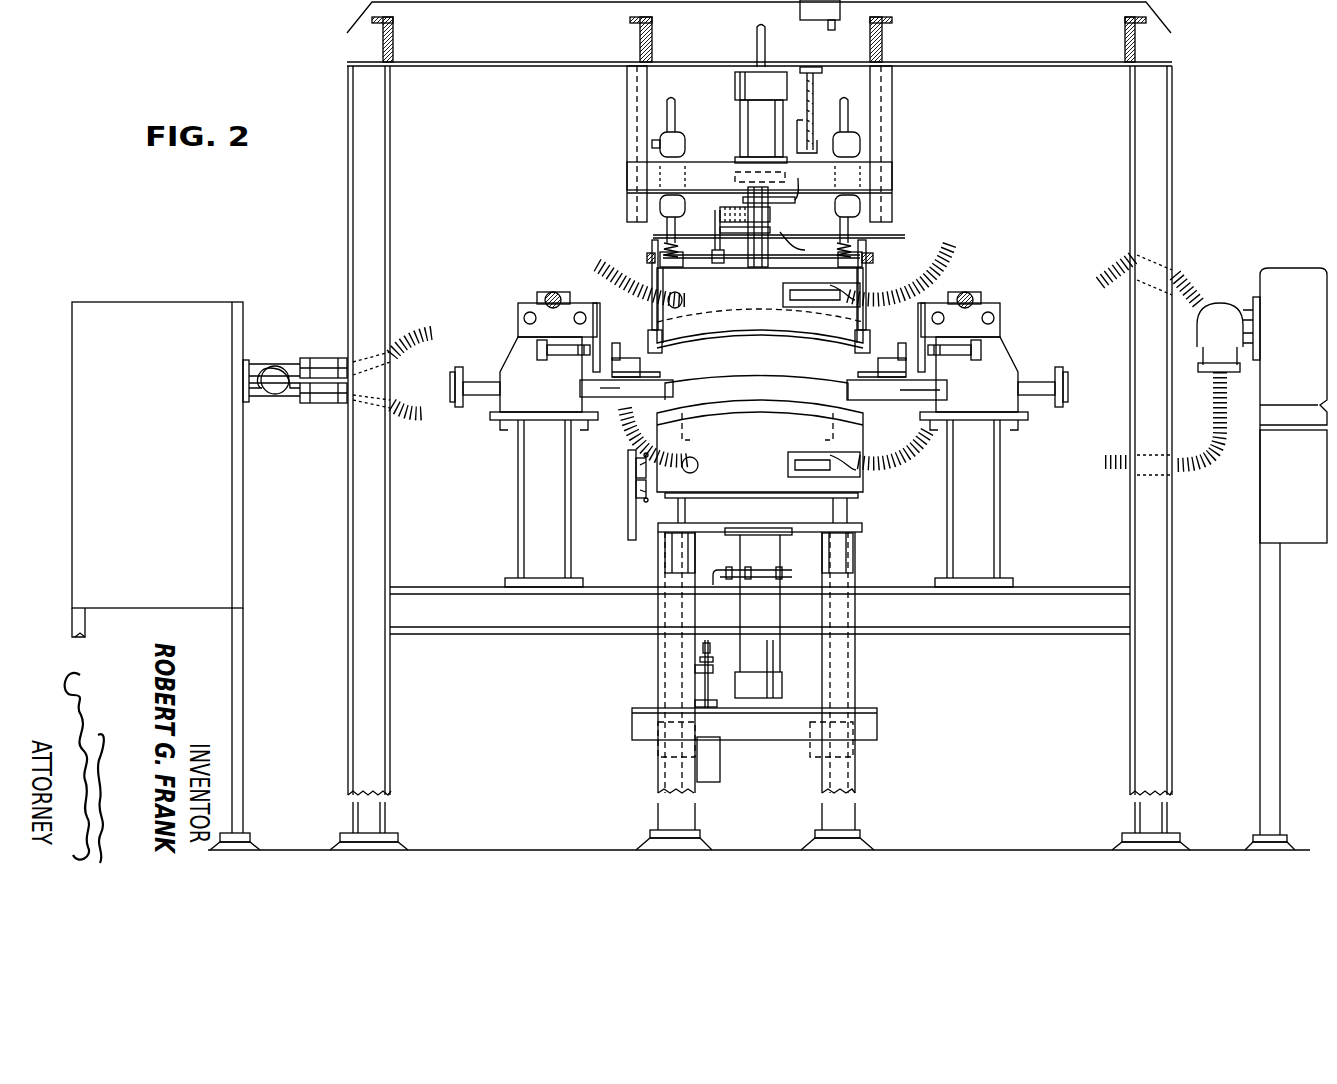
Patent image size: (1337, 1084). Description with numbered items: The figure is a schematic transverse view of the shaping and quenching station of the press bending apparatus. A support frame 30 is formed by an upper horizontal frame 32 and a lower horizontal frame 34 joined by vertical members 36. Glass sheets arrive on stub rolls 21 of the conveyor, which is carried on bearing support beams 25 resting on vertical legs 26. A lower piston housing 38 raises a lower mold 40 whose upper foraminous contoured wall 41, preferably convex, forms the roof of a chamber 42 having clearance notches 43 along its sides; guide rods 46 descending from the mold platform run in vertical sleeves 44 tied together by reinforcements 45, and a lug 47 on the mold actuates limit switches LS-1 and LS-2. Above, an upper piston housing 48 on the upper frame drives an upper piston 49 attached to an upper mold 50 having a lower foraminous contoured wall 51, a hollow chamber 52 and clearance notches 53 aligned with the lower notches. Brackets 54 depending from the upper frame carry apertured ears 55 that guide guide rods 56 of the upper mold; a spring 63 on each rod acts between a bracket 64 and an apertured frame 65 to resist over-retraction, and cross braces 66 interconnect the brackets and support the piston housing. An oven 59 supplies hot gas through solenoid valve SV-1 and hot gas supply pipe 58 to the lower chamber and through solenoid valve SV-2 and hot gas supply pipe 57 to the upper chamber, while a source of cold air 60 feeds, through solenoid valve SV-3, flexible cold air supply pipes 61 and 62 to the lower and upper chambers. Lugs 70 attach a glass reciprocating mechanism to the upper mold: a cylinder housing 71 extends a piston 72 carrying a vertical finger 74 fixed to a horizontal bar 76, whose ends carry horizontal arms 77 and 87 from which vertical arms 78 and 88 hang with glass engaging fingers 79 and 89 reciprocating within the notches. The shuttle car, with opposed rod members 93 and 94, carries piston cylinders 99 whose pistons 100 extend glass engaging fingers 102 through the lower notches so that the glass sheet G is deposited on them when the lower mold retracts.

The stub rolls 21 is at (925, 393).
The bearing support beams 25 is at (495, 422).
The vertical legs 26 is at (518, 537).
The support frame 30 is at (1195, 766).
The upper horizontal frame 32 is at (998, 66).
The lower horizontal frame 34 is at (1068, 634).
The vertical members 36 is at (390, 519).
The lower piston housing 38 is at (784, 672).
The lower mold 40 is at (793, 380).
The upper foraminous contoured wall 41 is at (713, 386).
The chamber 42 is at (758, 460).
The clearance notches 43 is at (686, 430).
The vertical sleeves 44 is at (658, 779).
The reinforcements 45 is at (757, 750).
The guide rods 46 is at (672, 578).
The lug 47 is at (672, 476).
The upper piston housing 48 is at (735, 84).
The upper piston 49 is at (757, 42).
The upper mold 50 is at (787, 334).
The lower foraminous contoured wall 51 is at (704, 333).
The hollow chamber 52 is at (760, 305).
The clearance notches 53 is at (800, 318).
The brackets 54 is at (627, 128).
The apertured ears 55 is at (660, 205).
The guide rods 56 is at (676, 115).
The hot gas supply pipe 57 is at (424, 332).
The hot gas supply pipe 58 is at (614, 415).
The oven 59 is at (143, 478).
The source of cold air 60 is at (1250, 516).
The cold air supply pipes 61 is at (932, 462).
The cold air supply pipes 62 is at (1105, 265).
The spring 63 is at (866, 253).
The bracket 64 is at (834, 244).
The apertured frame 65 is at (793, 223).
The cross braces 66 is at (698, 166).
The lugs 70 is at (792, 297).
The cylinder housing 71 is at (795, 182).
The piston 72 is at (725, 207).
The vertical finger 74 is at (715, 240).
The horizontal bar 76 is at (778, 275).
The horizontal arm 77 is at (652, 258).
The vertical arm 78 is at (647, 265).
The glass engaging finger 79 is at (652, 318).
The horizontal arm 87 is at (873, 260).
The vertical arm 88 is at (868, 318).
The glass engaging finger 89 is at (870, 344).
The rod member 93 is at (540, 298).
The rod member 94 is at (985, 299).
The piston cylinder 99 is at (545, 360).
The piston 100 is at (612, 350).
The glass engaging finger 102 is at (655, 378).
The glass sheet G is at (760, 358).
The limit switch LS-1 is at (628, 463).
The limit switch LS-2 is at (628, 497).
The solenoid valve SV-1 is at (312, 405).
The solenoid valve SV-2 is at (318, 358).
The solenoid valve SV-3 is at (1245, 303).